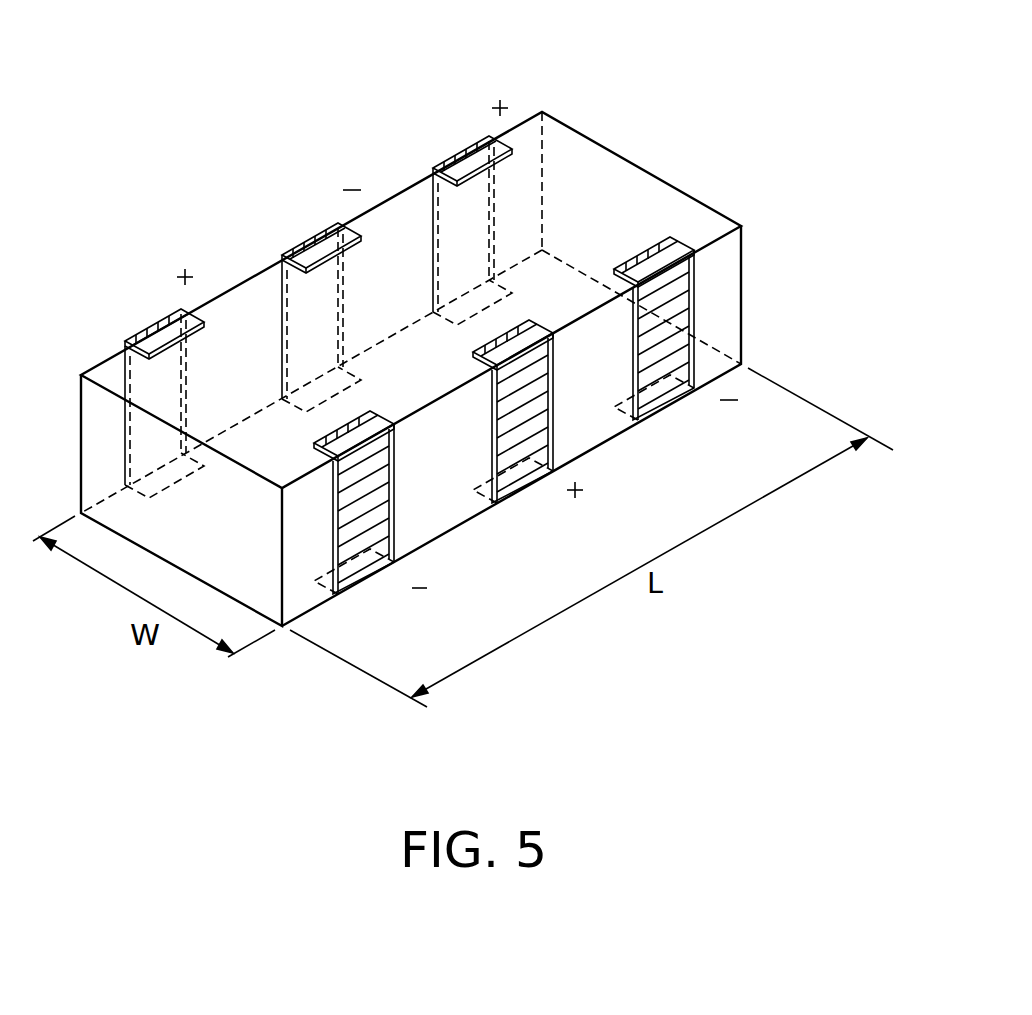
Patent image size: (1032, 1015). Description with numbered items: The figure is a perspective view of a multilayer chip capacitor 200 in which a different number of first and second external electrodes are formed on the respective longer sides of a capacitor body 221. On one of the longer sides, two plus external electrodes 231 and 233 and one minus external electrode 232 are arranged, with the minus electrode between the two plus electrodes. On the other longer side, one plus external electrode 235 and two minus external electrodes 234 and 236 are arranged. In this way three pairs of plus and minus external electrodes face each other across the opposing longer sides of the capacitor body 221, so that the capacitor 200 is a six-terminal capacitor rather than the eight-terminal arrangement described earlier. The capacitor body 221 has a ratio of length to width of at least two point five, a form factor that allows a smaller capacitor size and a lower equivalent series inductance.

The capacitor 200 is at (670, 25).
The capacitor body 221 is at (630, 183).
The plus external electrode 231 is at (157, 327).
The minus external electrode 232 is at (308, 241).
The plus external electrode 233 is at (462, 159).
The minus external electrode 234 is at (660, 358).
The plus external electrode 235 is at (513, 446).
The minus external electrode 236 is at (358, 533).